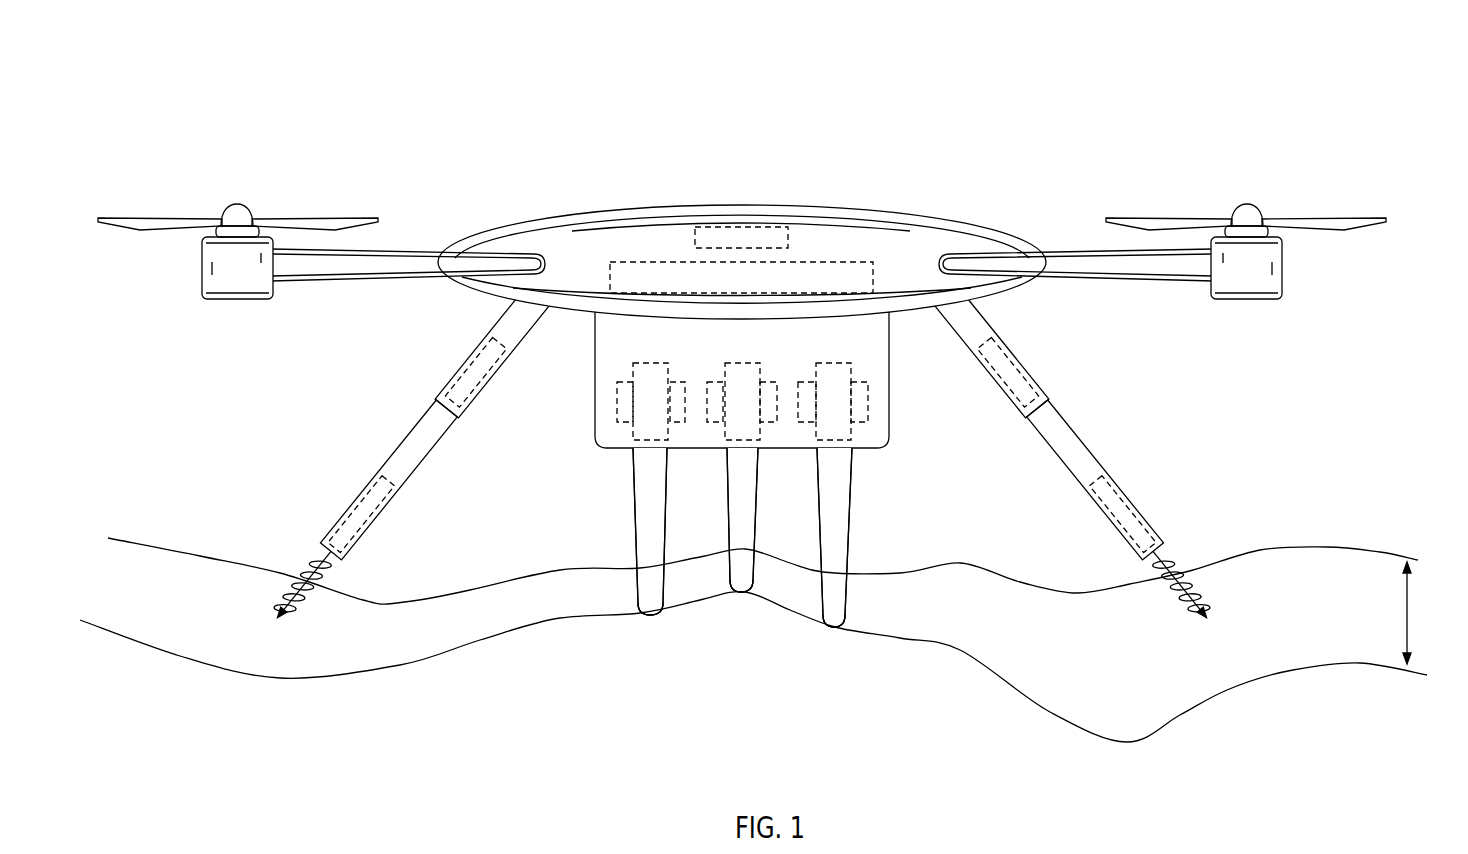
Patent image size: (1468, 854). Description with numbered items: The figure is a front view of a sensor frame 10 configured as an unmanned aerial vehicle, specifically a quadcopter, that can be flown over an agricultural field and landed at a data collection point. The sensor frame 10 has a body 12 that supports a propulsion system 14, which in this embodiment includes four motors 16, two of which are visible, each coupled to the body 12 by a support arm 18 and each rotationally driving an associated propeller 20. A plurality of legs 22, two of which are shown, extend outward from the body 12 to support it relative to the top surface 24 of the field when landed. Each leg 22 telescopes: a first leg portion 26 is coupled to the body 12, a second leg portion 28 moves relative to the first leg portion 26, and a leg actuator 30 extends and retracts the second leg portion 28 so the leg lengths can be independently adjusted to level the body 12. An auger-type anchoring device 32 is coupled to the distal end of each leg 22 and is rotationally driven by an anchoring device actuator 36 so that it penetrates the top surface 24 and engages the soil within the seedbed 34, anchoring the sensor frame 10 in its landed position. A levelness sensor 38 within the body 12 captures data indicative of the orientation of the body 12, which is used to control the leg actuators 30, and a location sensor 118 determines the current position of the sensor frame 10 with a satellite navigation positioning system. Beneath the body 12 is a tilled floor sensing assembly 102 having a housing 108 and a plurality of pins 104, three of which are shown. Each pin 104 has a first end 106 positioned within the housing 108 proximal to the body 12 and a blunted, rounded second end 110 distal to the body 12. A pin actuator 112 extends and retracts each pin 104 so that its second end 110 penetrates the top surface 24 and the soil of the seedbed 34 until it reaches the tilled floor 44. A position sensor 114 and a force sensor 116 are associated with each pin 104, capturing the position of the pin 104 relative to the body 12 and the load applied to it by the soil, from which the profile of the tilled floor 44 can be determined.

The sensor frame 10 is at (350, 78).
The body 12 is at (742, 228).
The propulsion system 14 is at (742, 245).
The motor 16 is at (228, 299).
The support arm 18 is at (327, 283).
The propeller 20 is at (145, 217).
The leg 22 is at (736, 460).
The top surface 24 is at (1337, 547).
The first leg portion 26 is at (490, 331).
The second leg portion 28 is at (390, 503).
The leg actuator 30 is at (452, 389).
The anchoring device 32 is at (262, 600).
The seedbed 34 is at (1408, 607).
The anchoring device actuator 36 is at (335, 522).
The levelness sensor 38 is at (818, 262).
The tilled floor 44 is at (1368, 663).
The tilled floor sensing assembly 102 is at (699, 504).
The pin 104 is at (739, 583).
The first end 106 is at (617, 463).
The housing 108 is at (722, 425).
The second end 110 is at (643, 643).
The pin actuator 112 is at (645, 362).
The position sensor 114 is at (617, 405).
The force sensor 116 is at (678, 382).
The location sensor 118 is at (738, 228).